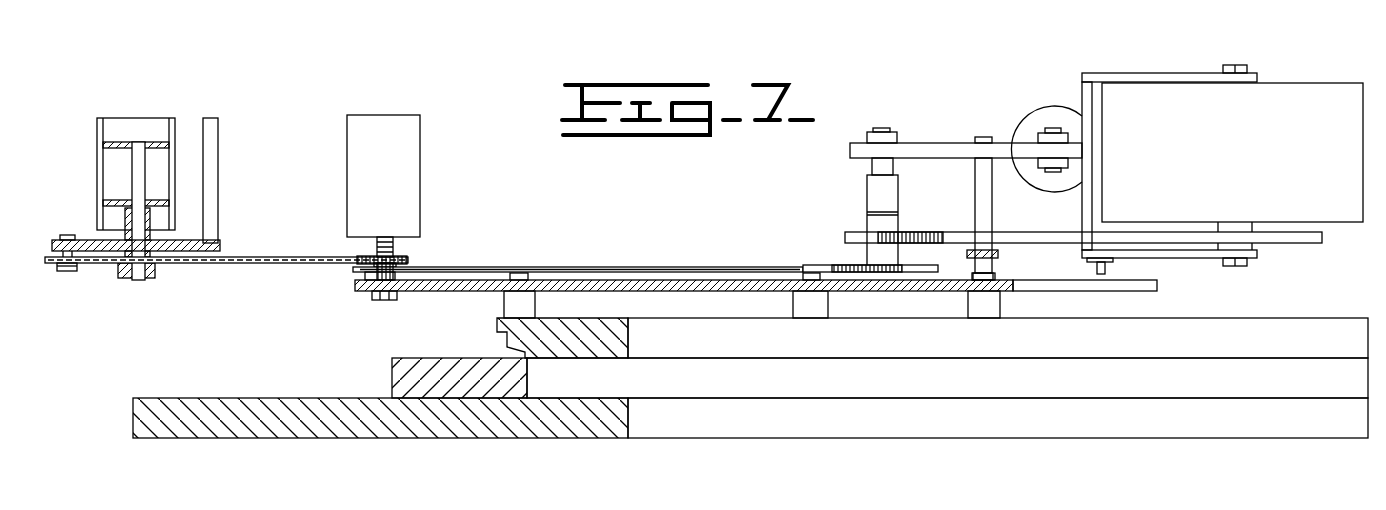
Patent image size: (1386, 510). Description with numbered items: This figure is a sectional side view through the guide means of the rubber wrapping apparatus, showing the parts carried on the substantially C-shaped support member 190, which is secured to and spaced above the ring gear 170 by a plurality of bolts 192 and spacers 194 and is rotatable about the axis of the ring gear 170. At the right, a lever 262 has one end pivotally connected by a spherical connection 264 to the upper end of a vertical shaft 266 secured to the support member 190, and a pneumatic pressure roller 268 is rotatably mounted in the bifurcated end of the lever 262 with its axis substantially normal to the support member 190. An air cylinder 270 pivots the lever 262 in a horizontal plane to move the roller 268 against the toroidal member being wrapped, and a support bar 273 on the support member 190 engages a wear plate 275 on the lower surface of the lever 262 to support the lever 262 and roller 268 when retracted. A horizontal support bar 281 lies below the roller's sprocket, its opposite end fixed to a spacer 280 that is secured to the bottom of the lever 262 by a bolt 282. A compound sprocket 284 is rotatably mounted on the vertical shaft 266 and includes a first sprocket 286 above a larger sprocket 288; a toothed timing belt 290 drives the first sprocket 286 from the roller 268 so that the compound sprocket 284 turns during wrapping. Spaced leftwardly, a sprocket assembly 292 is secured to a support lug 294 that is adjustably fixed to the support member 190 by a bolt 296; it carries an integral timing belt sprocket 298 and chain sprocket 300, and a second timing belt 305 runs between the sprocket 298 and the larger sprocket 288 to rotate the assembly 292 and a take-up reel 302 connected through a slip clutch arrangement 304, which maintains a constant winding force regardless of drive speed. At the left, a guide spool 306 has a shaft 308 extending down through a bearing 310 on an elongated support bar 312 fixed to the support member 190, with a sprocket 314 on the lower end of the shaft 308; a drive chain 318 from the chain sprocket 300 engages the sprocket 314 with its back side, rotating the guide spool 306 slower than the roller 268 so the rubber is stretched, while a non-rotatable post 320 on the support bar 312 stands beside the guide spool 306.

The ring gear 170 is at (605, 353).
The support member 190 is at (447, 292).
The bolts 192 is at (520, 273).
The spacers 194 is at (525, 306).
The lever 262 is at (918, 143).
The spherical connection 264 is at (848, 157).
The vertical shaft 266 is at (878, 170).
The pneumatic pressure roller 268 is at (1252, 165).
The air cylinder 270 is at (1045, 115).
The support bar 273 is at (1105, 270).
The wear plate 275 is at (1092, 263).
The spacer 280 is at (993, 213).
The support bar 281 is at (999, 257).
The bolt 282 is at (983, 137).
The compound sprocket 284 is at (855, 253).
The first sprocket 286 is at (906, 232).
The larger sprocket 288 is at (885, 273).
The toothed timing belt 290 is at (1278, 244).
The sprocket assembly 292 is at (420, 247).
The support lug 294 is at (364, 277).
The bolt 296 is at (385, 301).
The timing belt sprocket 298 is at (414, 268).
The chain sprocket 300 is at (373, 257).
The take-up reel 302 is at (412, 152).
The slip clutch arrangement 304 is at (385, 240).
The second timing belt 305 is at (652, 266).
The guide spool 306 is at (97, 135).
The shaft 308 is at (135, 162).
The bearing 310 is at (127, 240).
The support bar 312 is at (95, 241).
The sprocket 314 is at (112, 262).
The drive chain 318 is at (212, 264).
The post 320 is at (218, 134).